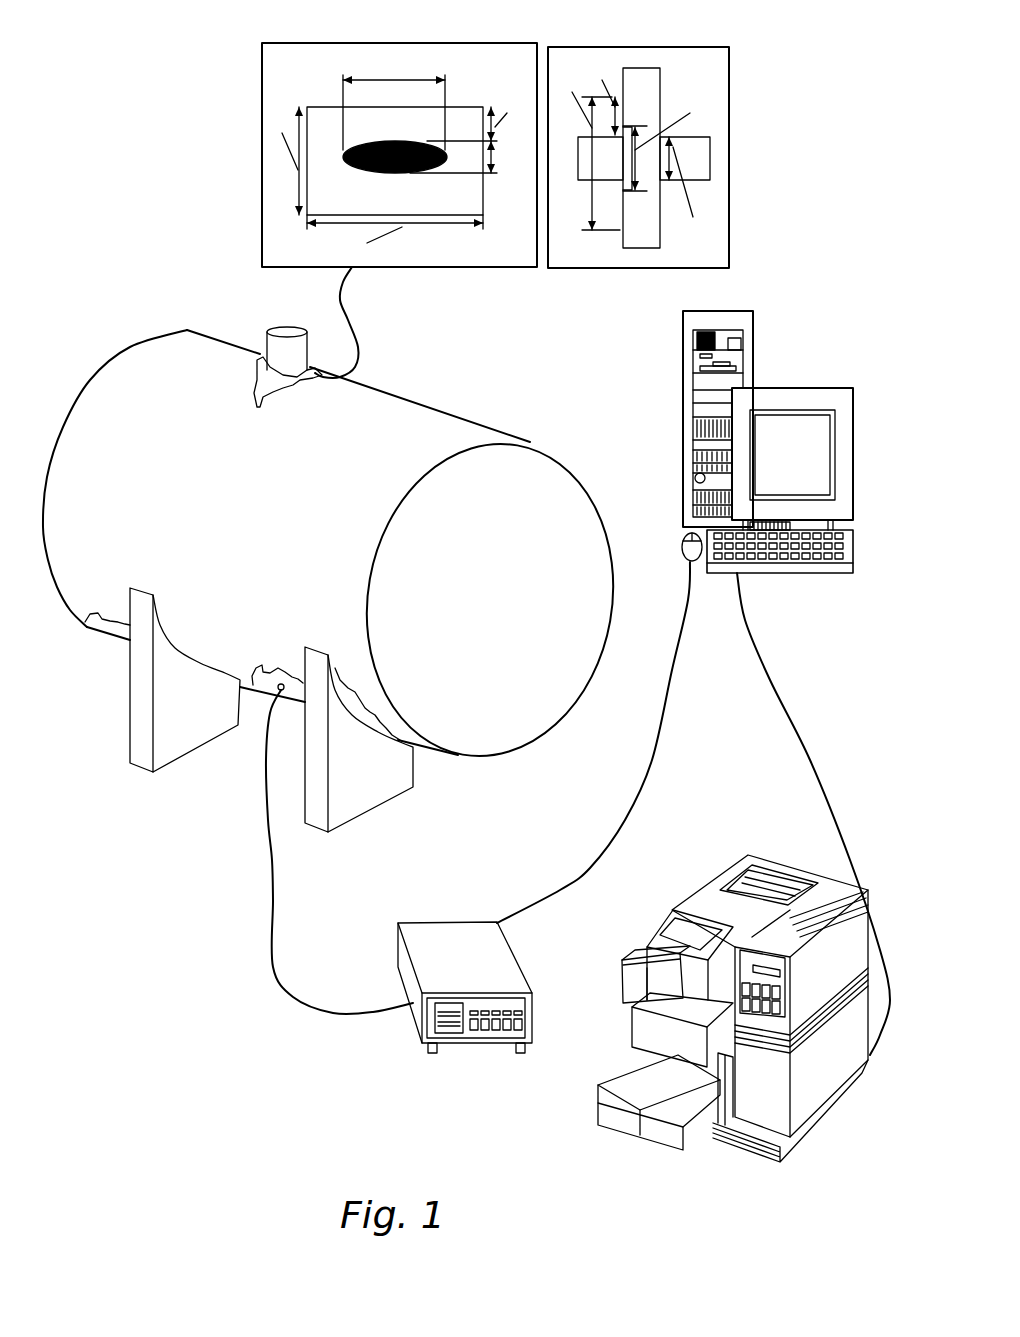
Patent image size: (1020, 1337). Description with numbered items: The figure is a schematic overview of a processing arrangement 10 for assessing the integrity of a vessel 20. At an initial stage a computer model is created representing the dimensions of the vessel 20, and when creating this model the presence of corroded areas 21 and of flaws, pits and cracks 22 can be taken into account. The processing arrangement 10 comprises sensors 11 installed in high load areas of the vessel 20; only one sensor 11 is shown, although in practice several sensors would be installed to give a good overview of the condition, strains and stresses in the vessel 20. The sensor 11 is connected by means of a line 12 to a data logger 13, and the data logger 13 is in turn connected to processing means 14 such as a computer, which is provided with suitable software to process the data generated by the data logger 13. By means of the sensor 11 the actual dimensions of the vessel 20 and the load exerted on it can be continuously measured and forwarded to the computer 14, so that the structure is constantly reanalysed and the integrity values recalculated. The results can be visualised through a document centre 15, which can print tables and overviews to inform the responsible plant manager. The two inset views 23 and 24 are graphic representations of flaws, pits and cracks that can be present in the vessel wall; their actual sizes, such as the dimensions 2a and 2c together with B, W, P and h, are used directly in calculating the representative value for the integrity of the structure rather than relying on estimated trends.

The processing arrangement 10 is at (232, 1009).
The sensor 11 is at (280, 689).
The line 12 is at (268, 860).
The data logger 13 is at (493, 958).
The processing means 14 is at (753, 360).
The document centre 15 is at (728, 1150).
The vessel 20 is at (535, 429).
The corroded areas 21 is at (120, 632).
The flaws, pits and cracks 22 is at (260, 388).
The graphic representation of flaws, pits and cracks 23 is at (348, 137).
The graphic representation of flaws, pits and cracks 24 is at (707, 75).
The flaw size 2a is at (495, 163).
The flaw size 2c is at (395, 80).